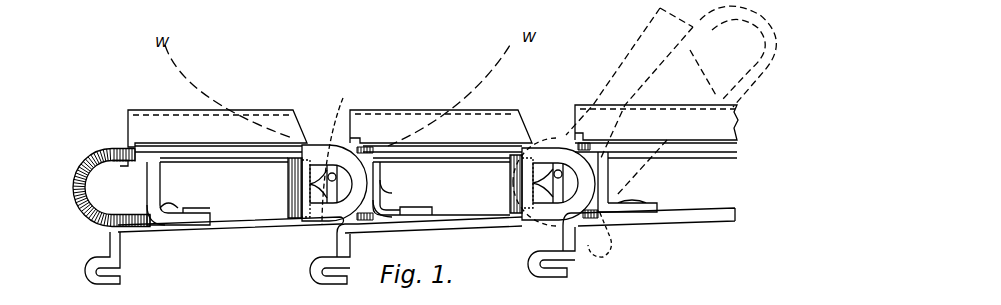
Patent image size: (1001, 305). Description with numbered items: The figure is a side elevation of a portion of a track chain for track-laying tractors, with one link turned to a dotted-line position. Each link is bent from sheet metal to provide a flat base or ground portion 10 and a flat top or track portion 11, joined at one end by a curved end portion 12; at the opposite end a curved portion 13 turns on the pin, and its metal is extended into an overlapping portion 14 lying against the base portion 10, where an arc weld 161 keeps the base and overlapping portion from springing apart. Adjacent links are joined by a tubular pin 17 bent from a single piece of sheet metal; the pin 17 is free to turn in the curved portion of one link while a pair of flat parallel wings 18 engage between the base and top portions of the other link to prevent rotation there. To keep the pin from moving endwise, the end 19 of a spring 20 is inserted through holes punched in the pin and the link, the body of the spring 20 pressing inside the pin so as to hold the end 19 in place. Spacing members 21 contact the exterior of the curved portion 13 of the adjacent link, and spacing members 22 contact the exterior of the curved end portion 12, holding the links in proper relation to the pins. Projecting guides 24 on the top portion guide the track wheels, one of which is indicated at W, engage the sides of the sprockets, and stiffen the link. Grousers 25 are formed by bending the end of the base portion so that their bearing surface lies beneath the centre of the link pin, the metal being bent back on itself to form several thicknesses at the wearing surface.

The base portion 10 is at (243, 227).
The top portion 11 is at (268, 135).
The curved end portion 12 is at (381, 193).
The curved portion 13 is at (78, 191).
The overlapping portion 14 is at (180, 214).
The pin 17 is at (358, 178).
The flat parallel wings 18 is at (306, 158).
The spring end 19 is at (304, 252).
The spring 20 is at (331, 205).
The spacing members 21 is at (289, 183).
The spacing members 22 is at (157, 178).
The projecting guides 24 is at (246, 114).
The grousers 25 is at (117, 260).
The arc weld 161 is at (173, 207).